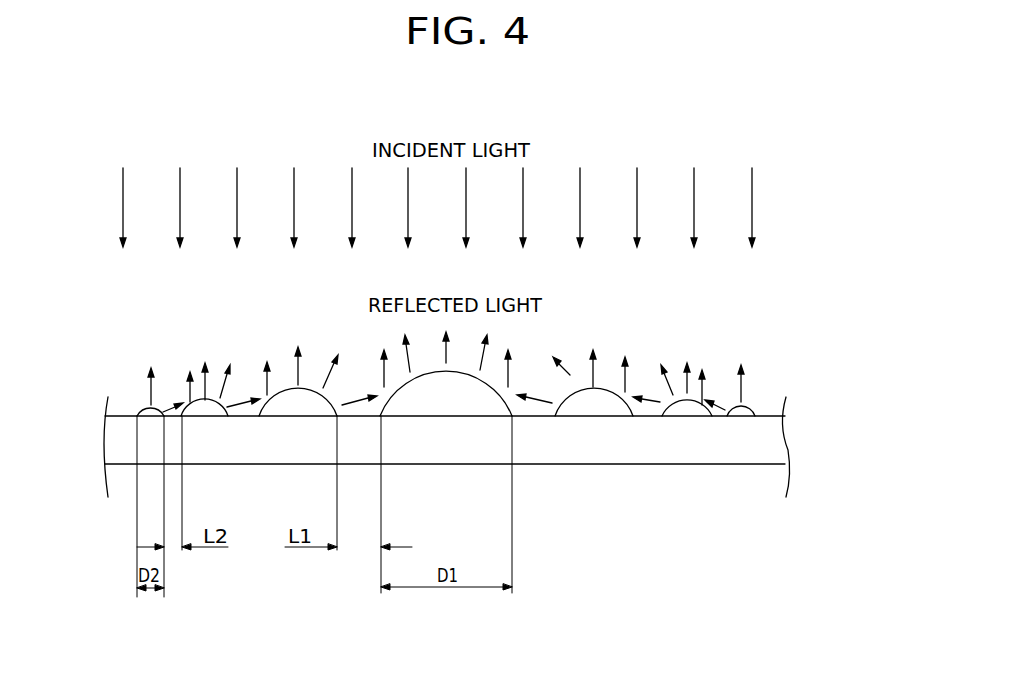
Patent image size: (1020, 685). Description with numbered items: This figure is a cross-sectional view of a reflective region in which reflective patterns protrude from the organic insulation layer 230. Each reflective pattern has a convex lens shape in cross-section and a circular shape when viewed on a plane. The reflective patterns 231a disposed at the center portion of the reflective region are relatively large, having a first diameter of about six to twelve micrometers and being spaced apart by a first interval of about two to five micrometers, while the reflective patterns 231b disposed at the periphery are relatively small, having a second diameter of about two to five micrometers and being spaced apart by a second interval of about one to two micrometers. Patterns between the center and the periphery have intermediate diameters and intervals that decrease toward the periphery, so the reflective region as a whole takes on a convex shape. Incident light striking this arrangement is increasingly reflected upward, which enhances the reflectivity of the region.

The organic insulation layer 230 is at (617, 448).
The reflective patterns at center portion 231a is at (448, 398).
The reflective patterns at periphery 231b is at (741, 416).